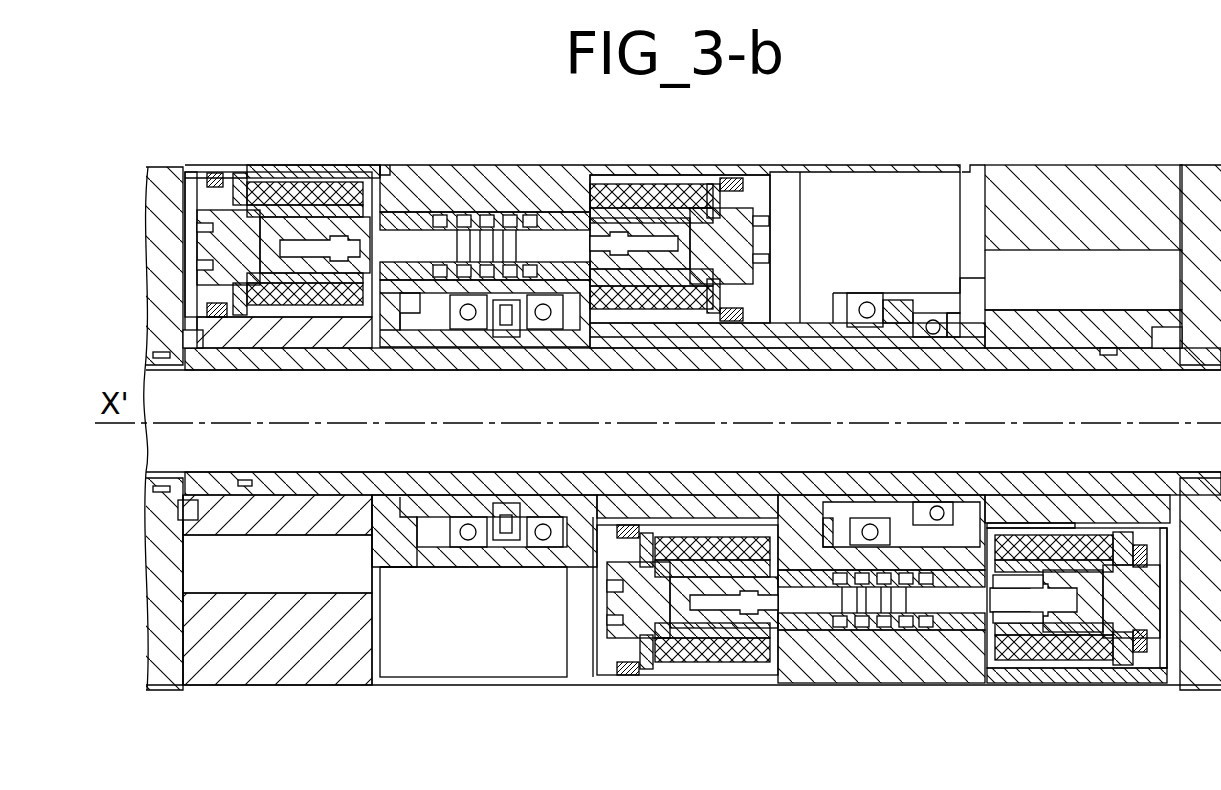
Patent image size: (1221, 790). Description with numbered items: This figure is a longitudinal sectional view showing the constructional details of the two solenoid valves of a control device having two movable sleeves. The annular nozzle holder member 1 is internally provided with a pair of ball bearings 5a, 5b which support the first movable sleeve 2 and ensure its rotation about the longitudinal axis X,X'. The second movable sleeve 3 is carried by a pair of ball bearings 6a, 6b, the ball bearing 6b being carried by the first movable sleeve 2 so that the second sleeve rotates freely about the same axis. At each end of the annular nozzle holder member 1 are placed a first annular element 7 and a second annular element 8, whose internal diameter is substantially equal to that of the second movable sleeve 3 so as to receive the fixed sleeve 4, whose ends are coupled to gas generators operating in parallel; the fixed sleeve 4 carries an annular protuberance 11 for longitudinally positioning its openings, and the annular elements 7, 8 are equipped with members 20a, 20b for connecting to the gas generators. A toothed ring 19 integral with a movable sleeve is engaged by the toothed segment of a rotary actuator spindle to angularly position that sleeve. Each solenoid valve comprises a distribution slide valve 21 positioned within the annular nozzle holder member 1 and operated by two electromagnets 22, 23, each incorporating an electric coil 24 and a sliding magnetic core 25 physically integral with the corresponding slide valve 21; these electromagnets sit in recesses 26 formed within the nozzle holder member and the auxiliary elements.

The annular nozzle holder member 1 is at (508, 178).
The first movable sleeve 2 is at (618, 352).
The second movable sleeve 3 is at (706, 352).
The fixed sleeve 4 is at (790, 355).
The ball bearing 5a is at (866, 303).
The ball bearing 5b is at (543, 335).
The ball bearing 6a is at (930, 318).
The ball bearing 6b is at (465, 335).
The first annular element 7 is at (1038, 170).
The second annular element 8 is at (372, 172).
The annular protuberance 11 is at (1153, 342).
The toothed ring 19 is at (990, 523).
The connecting member 20a is at (1200, 160).
The connecting member 20b is at (168, 160).
The distribution slide valve 21 is at (400, 235).
The electromagnet 22 is at (732, 182).
The electromagnet 23 is at (240, 200).
The electric coil 24 is at (330, 195).
The sliding magnetic core 25 is at (292, 232).
The recess 26 is at (186, 200).